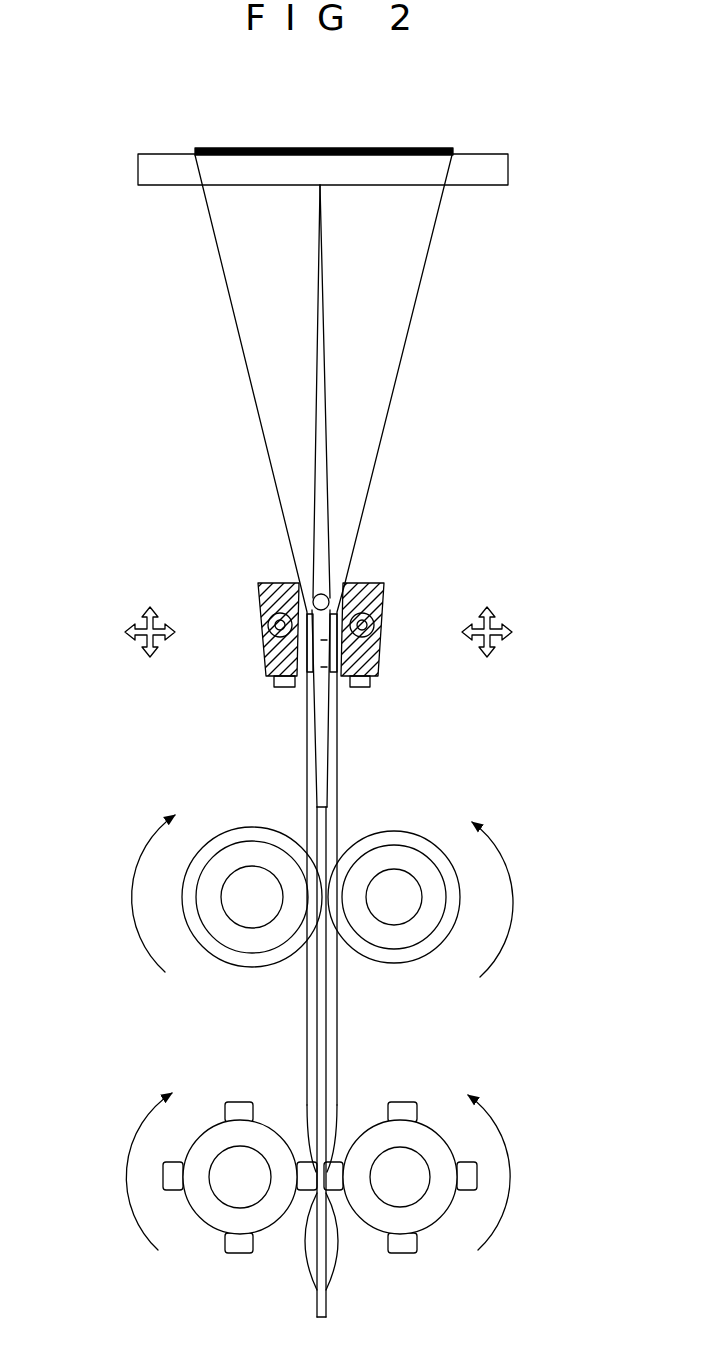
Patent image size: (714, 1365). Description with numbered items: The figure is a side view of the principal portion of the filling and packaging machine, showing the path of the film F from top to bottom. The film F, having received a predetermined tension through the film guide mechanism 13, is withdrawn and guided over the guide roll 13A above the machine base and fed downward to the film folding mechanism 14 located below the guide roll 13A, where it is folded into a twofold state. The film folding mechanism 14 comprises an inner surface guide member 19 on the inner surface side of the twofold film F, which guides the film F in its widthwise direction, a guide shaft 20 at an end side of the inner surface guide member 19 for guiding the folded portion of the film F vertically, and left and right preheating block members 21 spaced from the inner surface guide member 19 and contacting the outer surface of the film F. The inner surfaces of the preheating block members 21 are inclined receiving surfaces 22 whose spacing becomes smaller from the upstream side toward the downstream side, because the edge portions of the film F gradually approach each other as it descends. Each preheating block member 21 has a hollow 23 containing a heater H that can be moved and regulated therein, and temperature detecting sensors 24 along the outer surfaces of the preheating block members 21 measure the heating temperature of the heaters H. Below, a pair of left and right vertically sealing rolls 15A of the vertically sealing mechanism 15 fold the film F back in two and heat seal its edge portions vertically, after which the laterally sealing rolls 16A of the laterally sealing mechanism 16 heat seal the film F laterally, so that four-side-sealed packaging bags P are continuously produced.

The film guide mechanism 13 is at (335, 220).
The guide roll 13A is at (172, 172).
The film F is at (386, 404).
The film folding mechanism 14 is at (446, 546).
The preheating block member 21 is at (268, 602).
The inclined receiving surface 22 is at (296, 582).
The hollow 23 is at (274, 616).
The heater H is at (282, 626).
The inner surface guide member 19 is at (338, 658).
The temperature detecting sensor 24 is at (285, 684).
The guide shaft 20 is at (320, 744).
The vertically sealing mechanism 15 is at (357, 886).
The vertically sealing roll 15A is at (224, 951).
The laterally sealing mechanism 16 is at (336, 1178).
The laterally sealing roll 16A is at (238, 1113).
The packaging bag P is at (313, 1263).